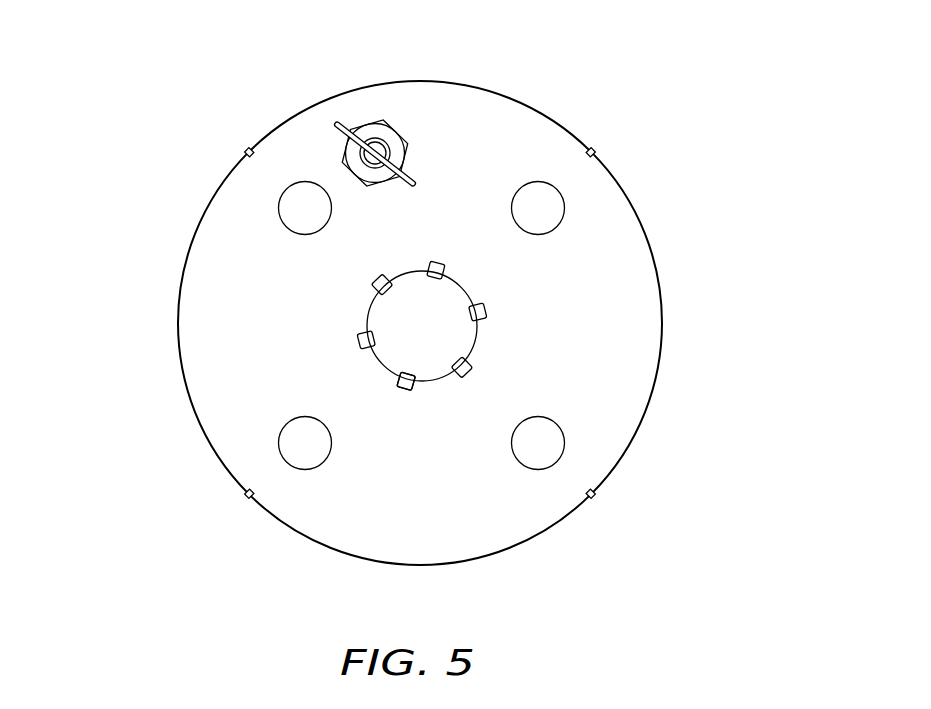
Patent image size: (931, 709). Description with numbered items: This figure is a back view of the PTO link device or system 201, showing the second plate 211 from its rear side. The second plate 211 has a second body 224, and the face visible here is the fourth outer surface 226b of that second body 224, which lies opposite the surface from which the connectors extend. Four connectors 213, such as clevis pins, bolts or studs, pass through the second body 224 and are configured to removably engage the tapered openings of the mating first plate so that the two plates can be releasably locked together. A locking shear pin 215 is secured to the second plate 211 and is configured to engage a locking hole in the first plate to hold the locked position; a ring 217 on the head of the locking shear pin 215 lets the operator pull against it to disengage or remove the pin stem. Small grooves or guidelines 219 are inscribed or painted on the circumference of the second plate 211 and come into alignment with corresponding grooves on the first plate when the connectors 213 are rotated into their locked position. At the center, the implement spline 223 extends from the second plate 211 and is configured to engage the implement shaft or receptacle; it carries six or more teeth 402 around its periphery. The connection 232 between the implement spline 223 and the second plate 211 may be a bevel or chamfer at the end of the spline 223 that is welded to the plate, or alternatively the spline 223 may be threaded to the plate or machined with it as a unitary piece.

The PTO link device or system 201 is at (727, 110).
The second plate 211 is at (503, 98).
The connectors 213 is at (300, 182).
The locking shear pin 215 is at (372, 120).
The ring 217 is at (337, 127).
The groove or guideline 219 is at (590, 150).
The implement spline 223 is at (487, 306).
The second body 224 is at (155, 320).
The fourth outer surface 226b is at (267, 334).
The connection 232 is at (482, 347).
The teeth 402 is at (398, 407).